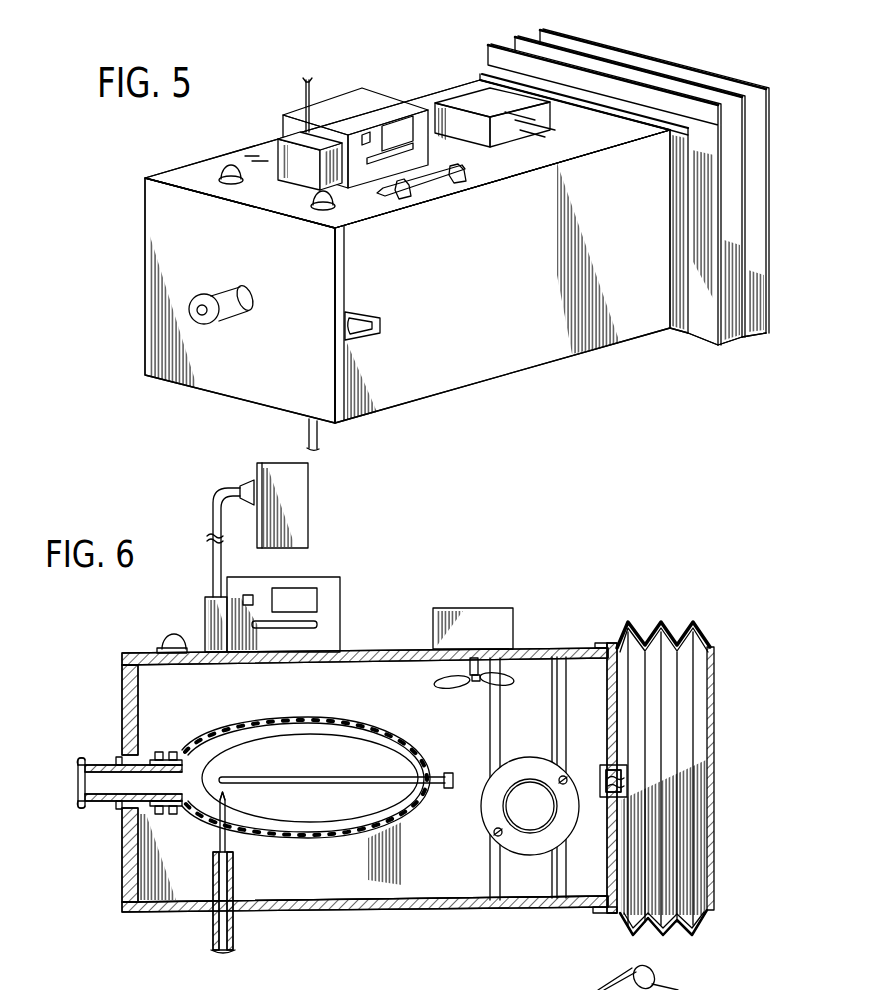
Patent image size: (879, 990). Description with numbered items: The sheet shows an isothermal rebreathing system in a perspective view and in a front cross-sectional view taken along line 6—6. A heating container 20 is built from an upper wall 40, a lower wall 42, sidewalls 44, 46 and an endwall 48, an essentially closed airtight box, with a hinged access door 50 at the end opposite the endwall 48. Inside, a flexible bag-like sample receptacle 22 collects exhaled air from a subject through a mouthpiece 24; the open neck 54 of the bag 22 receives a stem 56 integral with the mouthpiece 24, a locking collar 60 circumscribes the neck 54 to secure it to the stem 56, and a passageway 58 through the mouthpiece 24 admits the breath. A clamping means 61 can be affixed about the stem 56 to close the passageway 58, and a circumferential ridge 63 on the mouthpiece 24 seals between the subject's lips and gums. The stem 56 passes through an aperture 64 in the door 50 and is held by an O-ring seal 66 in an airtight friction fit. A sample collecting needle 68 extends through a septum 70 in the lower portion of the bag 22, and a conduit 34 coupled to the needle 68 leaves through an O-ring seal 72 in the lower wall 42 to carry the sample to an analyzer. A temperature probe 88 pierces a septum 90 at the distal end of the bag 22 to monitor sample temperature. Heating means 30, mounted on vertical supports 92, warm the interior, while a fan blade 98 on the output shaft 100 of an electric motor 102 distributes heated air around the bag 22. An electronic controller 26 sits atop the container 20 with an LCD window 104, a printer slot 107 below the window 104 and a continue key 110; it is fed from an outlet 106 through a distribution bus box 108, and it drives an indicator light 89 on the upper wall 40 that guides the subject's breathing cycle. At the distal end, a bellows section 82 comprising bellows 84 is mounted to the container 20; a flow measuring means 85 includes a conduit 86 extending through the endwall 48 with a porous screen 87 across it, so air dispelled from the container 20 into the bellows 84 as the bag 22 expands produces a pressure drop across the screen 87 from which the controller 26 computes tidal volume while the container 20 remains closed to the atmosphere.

In FIG. 5, the heating container 20 is at (176, 397).
In FIG. 6, the heating container 20 is at (128, 917).
In FIG. 6, the sample bag 22 is at (414, 820).
In FIG. 5, the mouthpiece 24 is at (195, 292).
In FIG. 6, the mouthpiece 24 is at (118, 806).
In FIG. 6, the electronic controller 26 is at (330, 610).
In FIG. 6, the heating means 30 is at (523, 818).
In FIG. 6, the conduit 34 is at (213, 940).
In FIG. 5, the upper wall 40 is at (208, 163).
In FIG. 6, the upper wall 40 is at (523, 650).
In FIG. 6, the lower wall 42 is at (373, 912).
In FIG. 6, the sidewall 44 is at (437, 893).
In FIG. 5, the sidewall 46 is at (523, 360).
In FIG. 6, the endwall 48 is at (607, 678).
In FIG. 5, the hinged access door 50 is at (152, 328).
In FIG. 6, the hinged access door 50 is at (124, 690).
In FIG. 6, the open neck 54 is at (118, 756).
In FIG. 6, the stem 56 is at (183, 755).
In FIG. 6, the passageway 58 is at (82, 760).
In FIG. 6, the locking collar 60 is at (160, 752).
In FIG. 6, the clamping means 61 is at (174, 752).
In FIG. 6, the circumferential ridge 63 is at (82, 806).
In FIG. 6, the aperture 64 is at (130, 767).
In FIG. 6, the O-ring seal 66 is at (128, 807).
In FIG. 6, the sample collecting needle 68 is at (213, 853).
In FIG. 6, the septum 70 is at (217, 840).
In FIG. 6, the O-ring seal 72 is at (237, 910).
In FIG. 5, the bellows section 82 is at (653, 50).
In FIG. 6, the bellows section 82 is at (641, 615).
In FIG. 5, the bellows 84 is at (768, 333).
In FIG. 6, the bellows 84 is at (692, 935).
In FIG. 6, the flow measuring means 85 is at (643, 762).
In FIG. 6, the conduit 86 is at (627, 776).
In FIG. 6, the porous screen 87 is at (627, 784).
In FIG. 6, the temperature probe 88 is at (400, 740).
In FIG. 6, the indicator light 89 is at (165, 640).
In FIG. 6, the septum 90 is at (442, 790).
In FIG. 6, the vertical supports 92 is at (505, 877).
In FIG. 6, the fan blade 98 is at (440, 687).
In FIG. 6, the output shaft 100 is at (436, 681).
In FIG. 6, the electric motor 102 is at (488, 609).
In FIG. 6, the LCD window 104 is at (315, 597).
In FIG. 6, the outlet 106 is at (300, 525).
In FIG. 6, the slot 107 is at (317, 625).
In FIG. 6, the distribution bus box 108 is at (207, 628).
In FIG. 6, the continue key 110 is at (253, 598).
In FIG. 5, the section line 6 is at (716, 50).